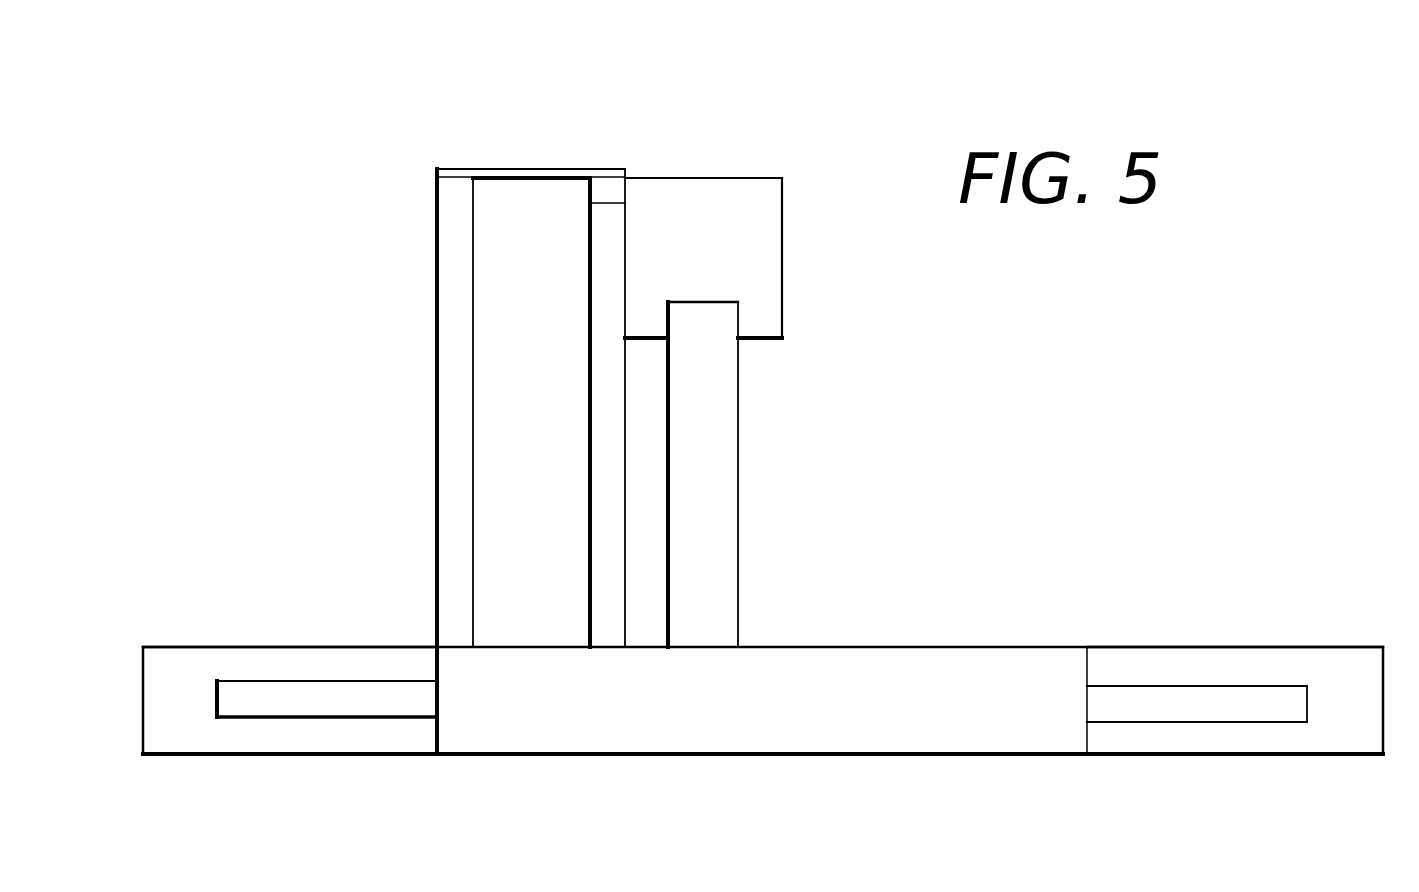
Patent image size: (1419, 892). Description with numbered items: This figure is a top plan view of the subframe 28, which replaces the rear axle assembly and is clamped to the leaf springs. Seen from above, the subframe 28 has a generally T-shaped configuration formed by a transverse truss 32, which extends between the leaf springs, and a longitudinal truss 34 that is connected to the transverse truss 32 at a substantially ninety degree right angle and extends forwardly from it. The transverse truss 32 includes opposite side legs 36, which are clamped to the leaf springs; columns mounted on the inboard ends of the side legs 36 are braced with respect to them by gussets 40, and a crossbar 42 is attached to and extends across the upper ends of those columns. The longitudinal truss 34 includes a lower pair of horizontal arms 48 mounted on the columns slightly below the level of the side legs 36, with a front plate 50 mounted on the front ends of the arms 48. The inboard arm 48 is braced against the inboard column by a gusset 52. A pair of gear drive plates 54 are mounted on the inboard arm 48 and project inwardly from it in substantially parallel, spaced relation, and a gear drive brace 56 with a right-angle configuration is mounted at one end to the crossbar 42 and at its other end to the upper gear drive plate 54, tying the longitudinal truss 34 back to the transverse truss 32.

The subframe 28 is at (370, 174).
The transverse truss 32 is at (1383, 648).
The longitudinal truss 34 is at (782, 178).
The side legs 36 is at (210, 646).
The gussets 40 is at (216, 705).
The crossbar 42 is at (692, 724).
The horizontal arms 48 is at (437, 447).
The front plate 50 is at (525, 168).
The gusset 52 is at (590, 448).
The gear drive plates 54 is at (733, 245).
The gear drive brace 56 is at (727, 441).